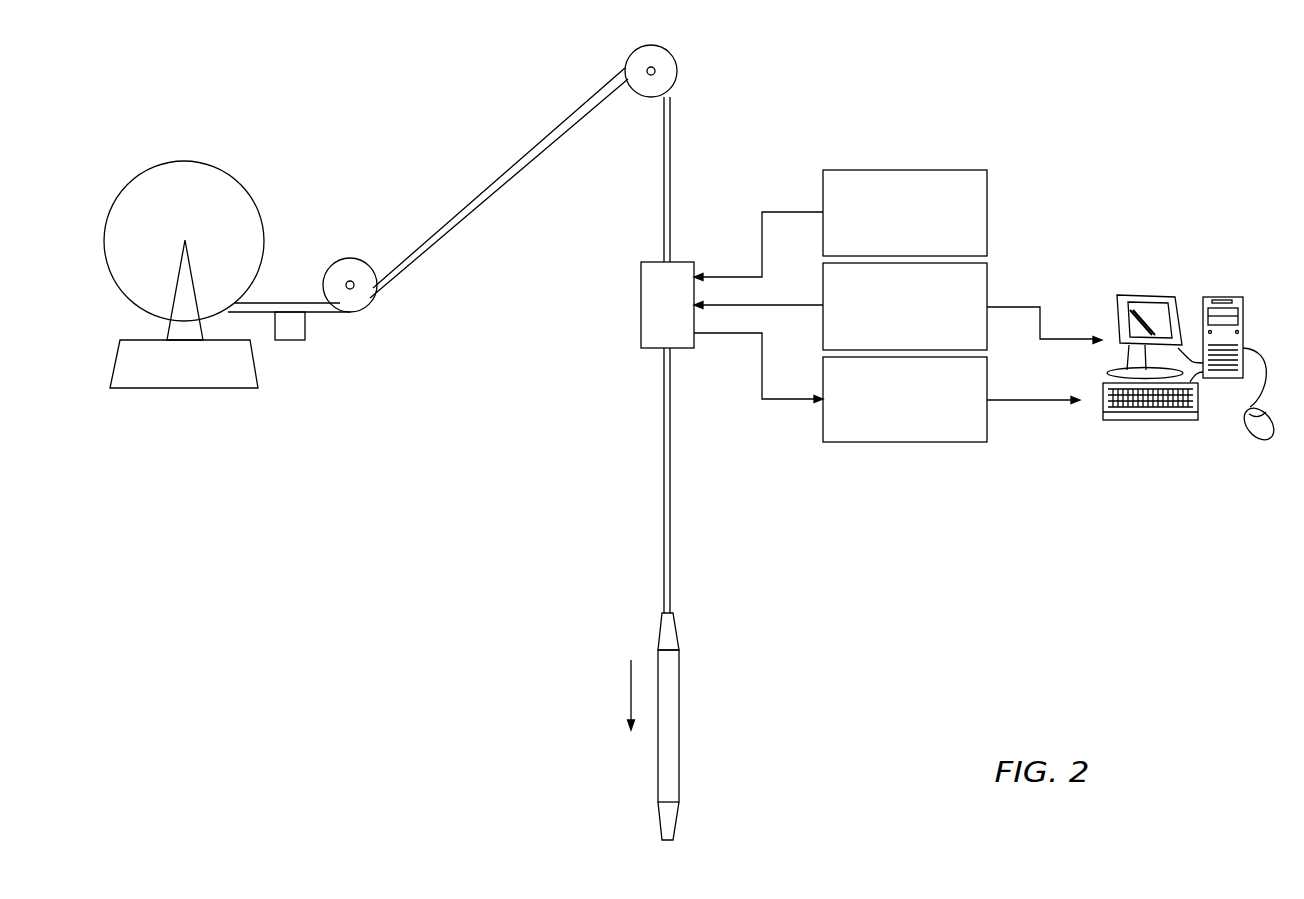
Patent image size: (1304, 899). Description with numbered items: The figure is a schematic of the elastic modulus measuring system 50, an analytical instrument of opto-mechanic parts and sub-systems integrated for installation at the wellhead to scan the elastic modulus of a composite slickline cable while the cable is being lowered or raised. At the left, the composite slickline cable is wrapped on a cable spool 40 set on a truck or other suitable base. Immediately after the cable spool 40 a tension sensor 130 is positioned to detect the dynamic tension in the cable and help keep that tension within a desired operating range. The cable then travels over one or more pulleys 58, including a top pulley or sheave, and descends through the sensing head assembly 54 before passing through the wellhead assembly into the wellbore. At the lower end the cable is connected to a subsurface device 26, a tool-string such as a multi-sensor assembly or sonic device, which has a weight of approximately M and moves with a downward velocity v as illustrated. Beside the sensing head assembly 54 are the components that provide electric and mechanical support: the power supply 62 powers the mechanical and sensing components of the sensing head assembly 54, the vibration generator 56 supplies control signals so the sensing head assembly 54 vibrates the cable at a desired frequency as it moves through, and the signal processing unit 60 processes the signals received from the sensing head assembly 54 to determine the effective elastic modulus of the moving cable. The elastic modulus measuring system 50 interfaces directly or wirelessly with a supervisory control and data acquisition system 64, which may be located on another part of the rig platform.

The cable spool 40 is at (136, 177).
The elastic modulus measuring system 50 is at (792, 124).
The pulleys 58 is at (359, 310).
The tension sensor 130 is at (300, 340).
The sensing head assembly 54 is at (641, 290).
The power supply 62 is at (987, 180).
The vibration generator 56 is at (987, 275).
The signal processing unit 60 is at (987, 433).
The supervisory control and data acquisition (SCADA) system 64 is at (1226, 262).
The subsurface device 26 is at (679, 680).